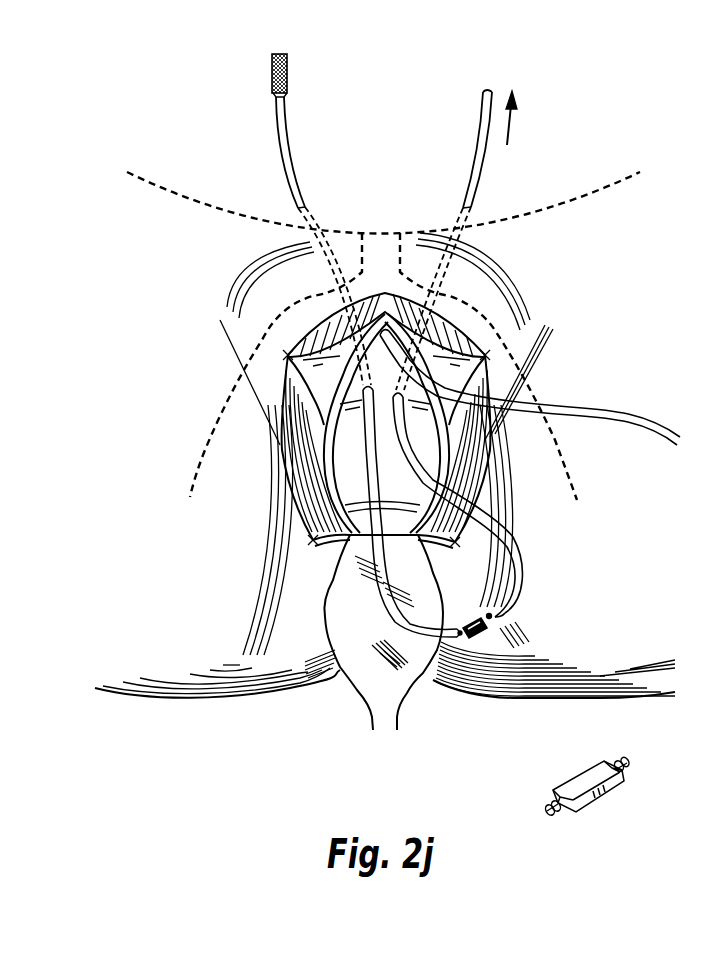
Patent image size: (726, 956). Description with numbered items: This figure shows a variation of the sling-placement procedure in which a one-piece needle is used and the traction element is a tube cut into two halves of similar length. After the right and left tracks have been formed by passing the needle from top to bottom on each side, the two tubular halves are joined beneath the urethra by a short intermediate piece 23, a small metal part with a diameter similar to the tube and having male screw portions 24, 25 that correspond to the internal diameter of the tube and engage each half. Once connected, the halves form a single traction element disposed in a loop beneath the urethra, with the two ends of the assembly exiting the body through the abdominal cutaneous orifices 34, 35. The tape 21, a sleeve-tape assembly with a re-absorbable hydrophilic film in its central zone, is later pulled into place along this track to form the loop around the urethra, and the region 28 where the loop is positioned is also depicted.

The tape 21 is at (272, 72).
The abdominal cutaneous orifice 34 is at (300, 207).
The abdominal cutaneous orifice 35 is at (473, 207).
The sling mesh / urethral support 28 is at (440, 353).
The intermediate piece 23 is at (488, 637).
The male screw portion 24 is at (555, 813).
The male screw portion 25 is at (625, 771).